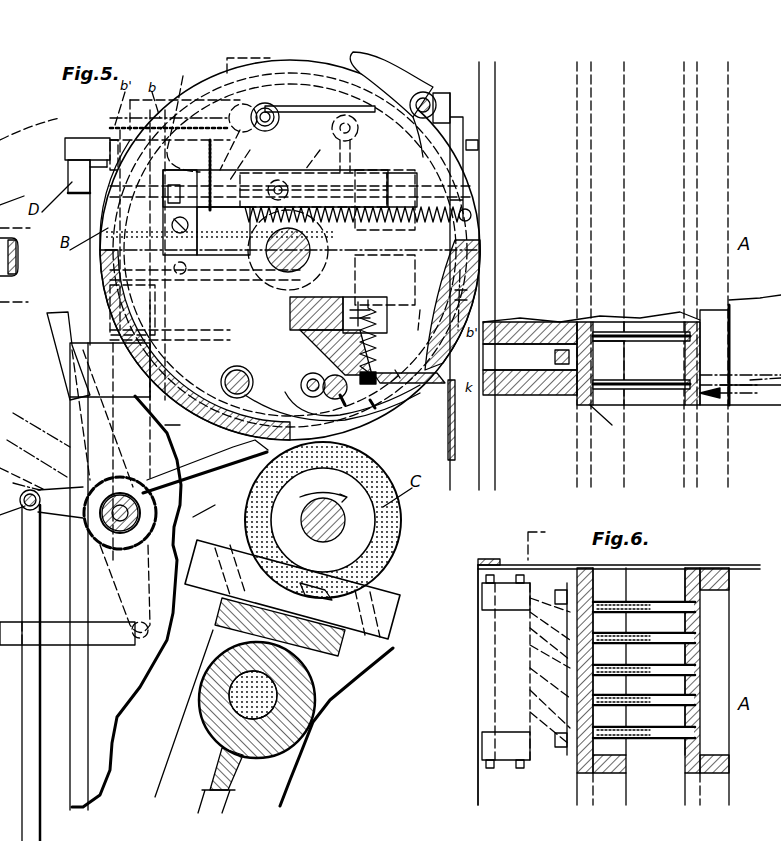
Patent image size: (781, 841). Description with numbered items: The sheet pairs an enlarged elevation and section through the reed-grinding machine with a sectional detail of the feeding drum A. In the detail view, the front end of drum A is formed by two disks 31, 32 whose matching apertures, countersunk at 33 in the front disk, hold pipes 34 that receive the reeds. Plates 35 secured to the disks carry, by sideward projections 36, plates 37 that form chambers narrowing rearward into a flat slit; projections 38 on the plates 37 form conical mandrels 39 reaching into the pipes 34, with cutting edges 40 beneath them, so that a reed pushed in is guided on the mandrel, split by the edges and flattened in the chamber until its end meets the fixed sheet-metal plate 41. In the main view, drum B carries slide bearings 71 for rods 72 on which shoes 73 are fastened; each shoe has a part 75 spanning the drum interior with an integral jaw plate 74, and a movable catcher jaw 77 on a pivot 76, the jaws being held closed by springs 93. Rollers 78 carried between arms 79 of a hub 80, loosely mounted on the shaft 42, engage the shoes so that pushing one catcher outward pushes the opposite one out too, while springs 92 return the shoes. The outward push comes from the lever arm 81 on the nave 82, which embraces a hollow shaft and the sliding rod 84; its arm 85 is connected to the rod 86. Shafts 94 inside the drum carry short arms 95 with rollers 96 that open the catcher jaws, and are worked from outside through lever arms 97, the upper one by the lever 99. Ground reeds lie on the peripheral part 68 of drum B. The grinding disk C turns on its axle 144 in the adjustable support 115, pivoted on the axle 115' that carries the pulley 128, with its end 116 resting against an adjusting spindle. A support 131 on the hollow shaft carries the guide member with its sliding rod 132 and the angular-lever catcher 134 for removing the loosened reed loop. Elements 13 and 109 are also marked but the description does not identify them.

In FIG. 5, the link arm 13 is at (107, 527).
In FIG. 5, the front disk 31 is at (718, 365).
In FIG. 6, the front disk 31 is at (702, 789).
In FIG. 6, the disk 32 is at (601, 789).
In FIG. 5, the countersink 33 is at (705, 345).
In FIG. 6, the countersink 33 is at (708, 612).
In FIG. 5, the pipes 34 is at (635, 342).
In FIG. 6, the pipes 34 is at (625, 605).
In FIG. 5, the plates 35 is at (530, 335).
In FIG. 6, the plates 35 is at (478, 688).
In FIG. 5, the sideward extending projections 36 is at (500, 320).
In FIG. 6, the sideward extending projections 36 is at (541, 543).
In FIG. 5, the plates 37 is at (500, 345).
In FIG. 6, the plates 37 is at (478, 632).
In FIG. 5, the projections 38 is at (585, 335).
In FIG. 6, the projections 38 is at (550, 669).
In FIG. 5, the conical mandrels 39 is at (618, 320).
In FIG. 6, the conical mandrels 39 is at (612, 640).
In FIG. 5, the cutting edges 40 is at (612, 358).
In FIG. 5, the sheet-metal plate 41 is at (455, 480).
In FIG. 5, the shaft 42 is at (288, 250).
In FIG. 5, the peripheral part 68 is at (300, 90).
In FIG. 5, the slide bearings 71 is at (385, 175).
In FIG. 5, the rods 72 is at (500, 145).
In FIG. 5, the shoes 73 is at (280, 178).
In FIG. 5, the end member or plate 74 is at (190, 180).
In FIG. 5, the part 75 is at (250, 168).
In FIG. 5, the pivot 76 is at (358, 135).
In FIG. 5, the movable catcher jaw 77 is at (430, 422).
In FIG. 5, the rollers 78 is at (318, 154).
In FIG. 5, the arms 79 is at (360, 245).
In FIG. 5, the hub 80 is at (318, 268).
In FIG. 5, the lever arm 81 is at (60, 350).
In FIG. 5, the nave or box 82 is at (143, 530).
In FIG. 5, the rod 84 is at (130, 503).
In FIG. 5, the arm 85 is at (130, 595).
In FIG. 5, the rod 86 is at (48, 635).
In FIG. 5, the springs 92 is at (505, 185).
In FIG. 5, the springs 93 is at (245, 105).
In FIG. 5, the shafts 94 is at (268, 108).
In FIG. 5, the short lever arms 95 is at (370, 415).
In FIG. 5, the rollers 96 is at (390, 425).
In FIG. 5, the lever arms 97 is at (372, 93).
In FIG. 5, the lever 99 is at (420, 92).
In FIG. 5, the bracket 109 is at (438, 95).
In FIG. 5, the adjustable support 115 is at (274, 718).
In FIG. 5, the axle 115' is at (278, 700).
In FIG. 5, the end 116 is at (235, 780).
In FIG. 5, the pulley 128 is at (390, 535).
In FIG. 5, the support 131 is at (98, 262).
In FIG. 5, the rod 132 is at (118, 150).
In FIG. 5, the catcher 134 is at (72, 140).
In FIG. 5, the axle 144 is at (335, 535).